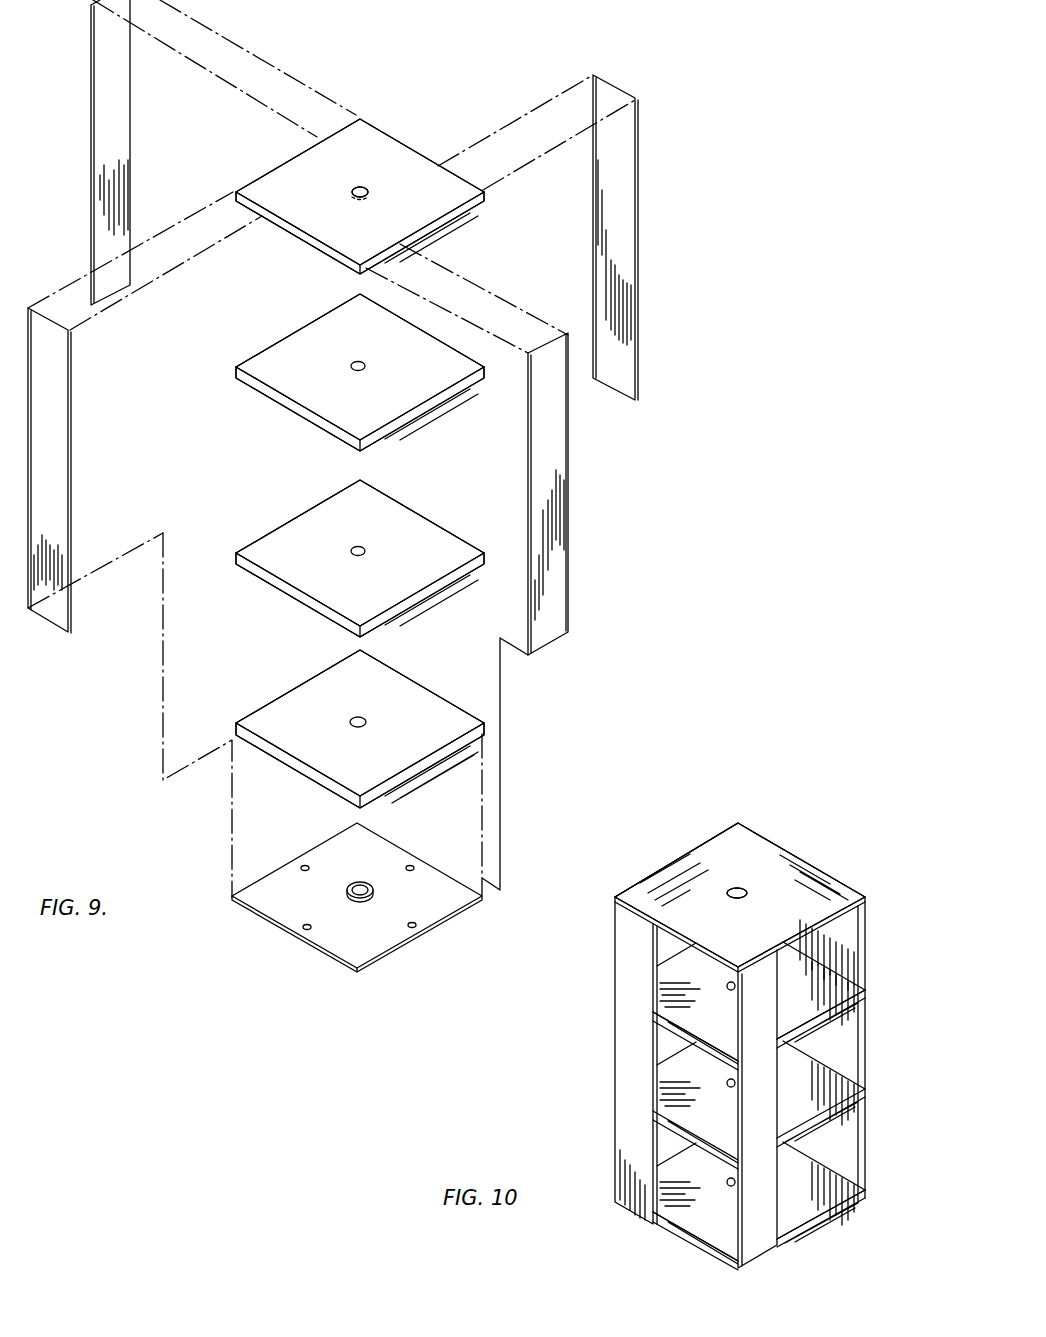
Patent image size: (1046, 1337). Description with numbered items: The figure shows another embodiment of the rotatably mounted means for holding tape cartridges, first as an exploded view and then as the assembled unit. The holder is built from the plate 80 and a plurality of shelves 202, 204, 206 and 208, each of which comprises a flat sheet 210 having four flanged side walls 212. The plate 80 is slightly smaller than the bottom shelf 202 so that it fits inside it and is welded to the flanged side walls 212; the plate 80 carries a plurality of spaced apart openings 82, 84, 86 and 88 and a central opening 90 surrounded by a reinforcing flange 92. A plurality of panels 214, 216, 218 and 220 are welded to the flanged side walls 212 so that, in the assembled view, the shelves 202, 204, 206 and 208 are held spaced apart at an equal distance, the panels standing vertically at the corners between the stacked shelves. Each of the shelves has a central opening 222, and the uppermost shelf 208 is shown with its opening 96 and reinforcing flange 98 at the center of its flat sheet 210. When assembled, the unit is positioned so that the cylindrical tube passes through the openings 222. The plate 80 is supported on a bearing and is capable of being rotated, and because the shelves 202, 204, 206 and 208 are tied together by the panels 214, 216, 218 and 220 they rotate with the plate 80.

In FIG. 9, the plate 80 is at (357, 897).
In FIG. 9, the opening 82 is at (412, 866).
In FIG. 9, the opening 84 is at (415, 925).
In FIG. 9, the opening 86 is at (307, 929).
In FIG. 9, the opening 88 is at (303, 867).
In FIG. 9, the central opening 90 is at (348, 896).
In FIG. 9, the reinforcing flange 92 is at (373, 893).
In FIG. 9, the central opening 96 is at (367, 190).
In FIG. 10, the central opening 96 is at (743, 888).
In FIG. 9, the reinforcing flange 98 is at (370, 198).
In FIG. 9, the shelf 202 is at (215, 792).
In FIG. 10, the shelf 202 is at (617, 1251).
In FIG. 9, the shelf 204 is at (250, 598).
In FIG. 10, the shelf 204 is at (598, 1129).
In FIG. 9, the shelf 206 is at (243, 413).
In FIG. 10, the shelf 206 is at (585, 1015).
In FIG. 9, the shelf 208 is at (246, 256).
In FIG. 10, the shelf 208 is at (605, 932).
In FIG. 9, the flat sheet 210 is at (372, 161).
In FIG. 10, the flat sheet 210 is at (745, 868).
In FIG. 9, the flanged side walls 212 is at (457, 217).
In FIG. 10, the flanged side walls 212 is at (693, 945).
In FIG. 9, the panel 214 is at (72, 447).
In FIG. 10, the panel 214 is at (648, 1073).
In FIG. 9, the panel 216 is at (133, 133).
In FIG. 10, the panel 216 is at (700, 848).
In FIG. 9, the panel 218 is at (640, 208).
In FIG. 10, the panel 218 is at (868, 930).
In FIG. 9, the panel 220 is at (568, 537).
In FIG. 10, the panel 220 is at (775, 1108).
In FIG. 9, the central opening 222 is at (352, 196).
In FIG. 10, the central opening 222 is at (745, 903).